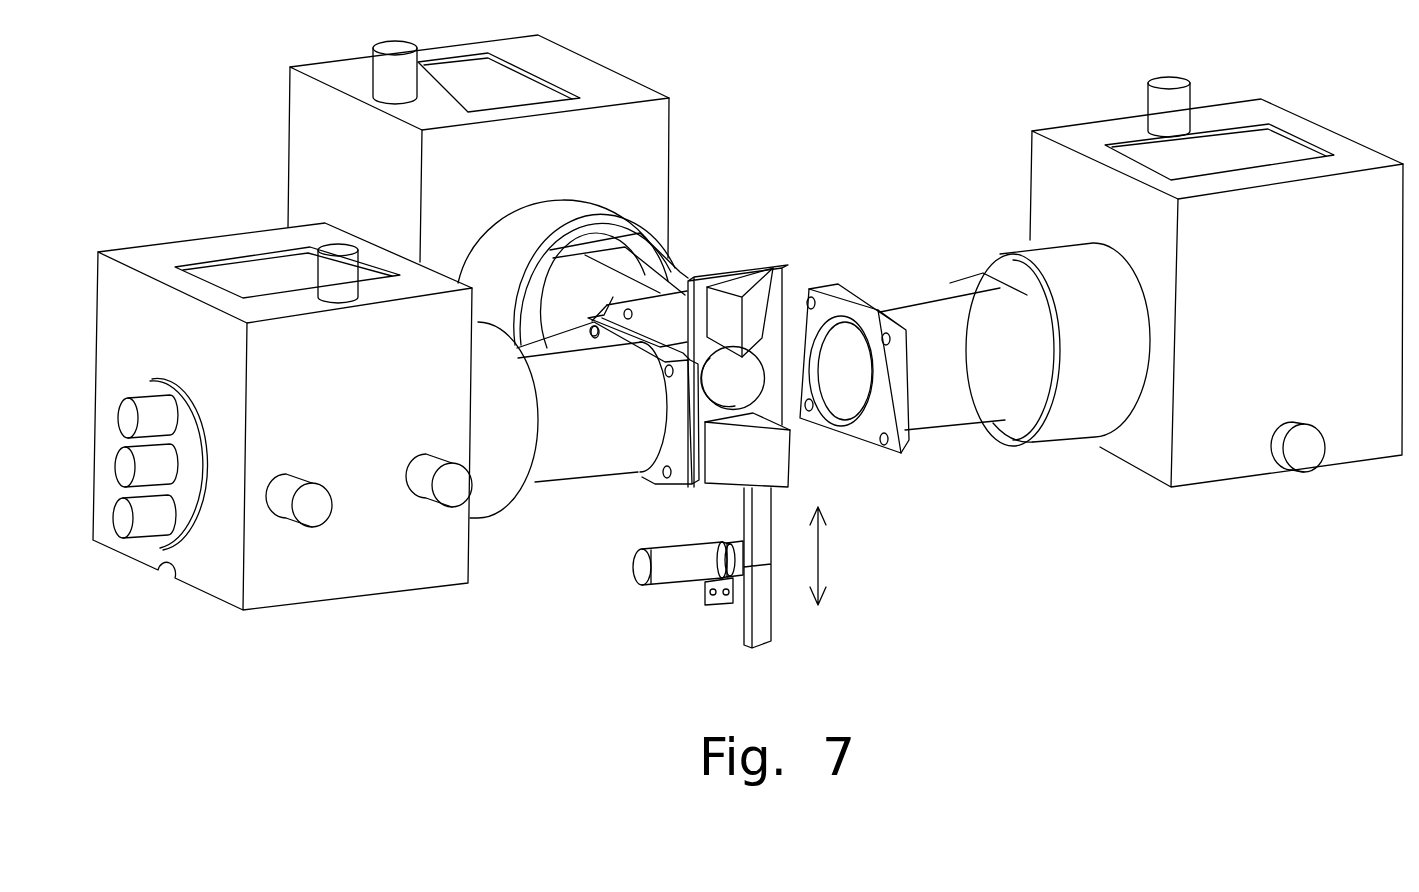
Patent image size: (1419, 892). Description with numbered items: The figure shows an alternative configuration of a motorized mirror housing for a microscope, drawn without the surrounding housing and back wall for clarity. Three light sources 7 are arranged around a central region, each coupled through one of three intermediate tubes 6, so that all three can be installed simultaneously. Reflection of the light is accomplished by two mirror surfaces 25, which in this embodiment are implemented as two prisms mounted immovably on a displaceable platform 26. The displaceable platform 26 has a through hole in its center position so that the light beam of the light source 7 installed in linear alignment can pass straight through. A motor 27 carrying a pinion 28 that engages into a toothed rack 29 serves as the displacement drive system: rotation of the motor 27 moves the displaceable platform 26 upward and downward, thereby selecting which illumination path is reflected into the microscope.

The intermediate tube 6 is at (558, 468).
The light source 7 is at (352, 578).
The mirror surface 25 is at (750, 302).
The displaceable platform 26 is at (768, 337).
The motor 27 is at (690, 572).
The pinion 28 is at (737, 542).
The toothed rack 29 is at (760, 592).